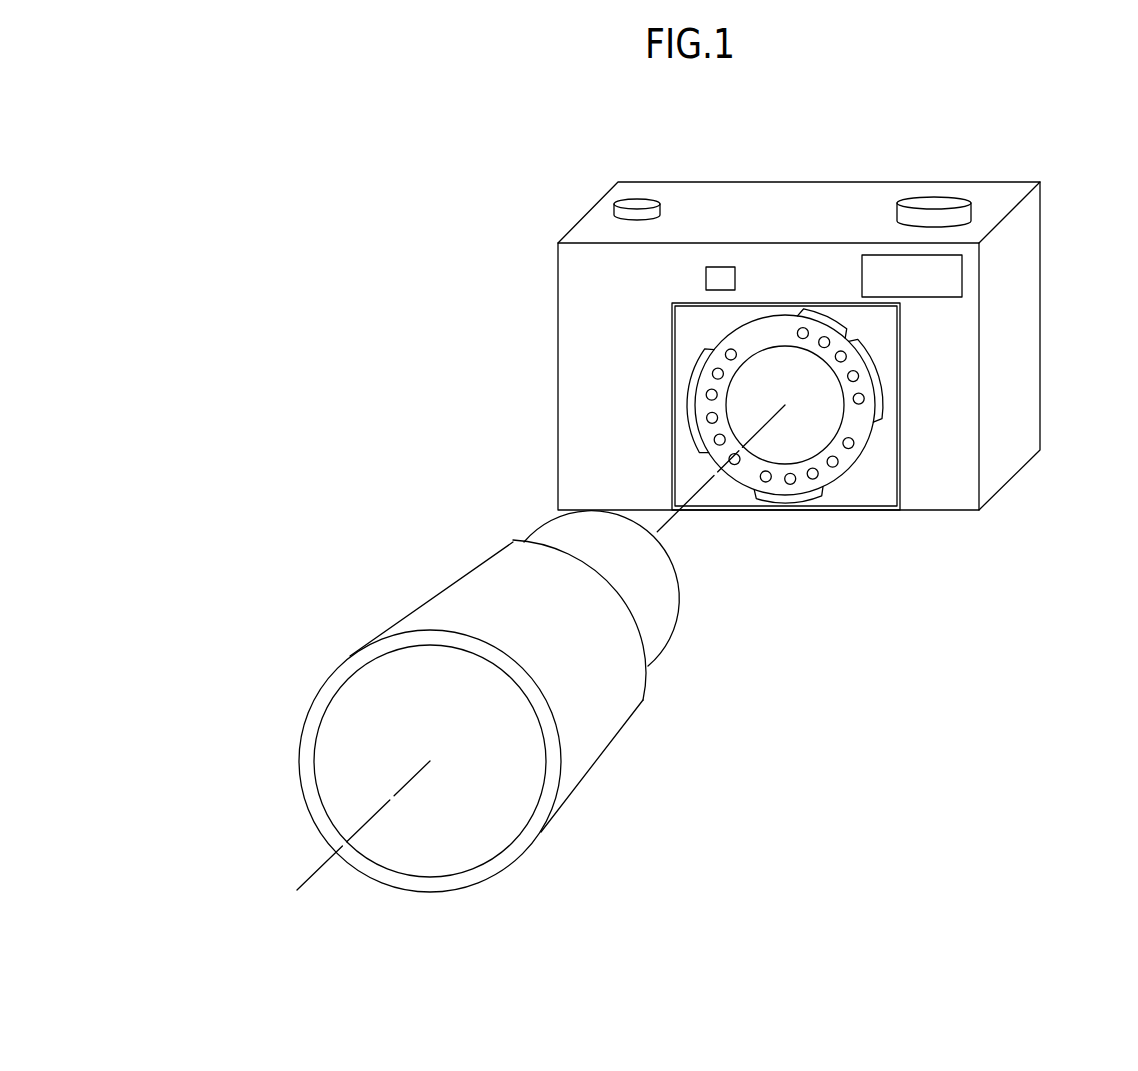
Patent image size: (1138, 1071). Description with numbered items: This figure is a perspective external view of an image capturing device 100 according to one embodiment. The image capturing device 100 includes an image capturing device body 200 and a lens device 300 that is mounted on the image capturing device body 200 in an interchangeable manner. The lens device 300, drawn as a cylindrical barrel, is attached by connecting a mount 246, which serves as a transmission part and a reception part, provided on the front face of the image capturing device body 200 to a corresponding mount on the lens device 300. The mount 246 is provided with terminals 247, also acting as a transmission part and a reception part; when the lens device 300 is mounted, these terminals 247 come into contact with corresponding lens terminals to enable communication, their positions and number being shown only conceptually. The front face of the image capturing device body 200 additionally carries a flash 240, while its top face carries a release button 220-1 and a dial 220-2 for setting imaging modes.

The image capturing device 100 is at (336, 432).
The image capturing device body 200 is at (947, 488).
The release button 220-1 is at (640, 204).
The dial 220-2 is at (935, 204).
The flash 240 is at (950, 273).
The mount 246 is at (858, 421).
The terminals 247 is at (857, 338).
The lens device 300 is at (612, 722).